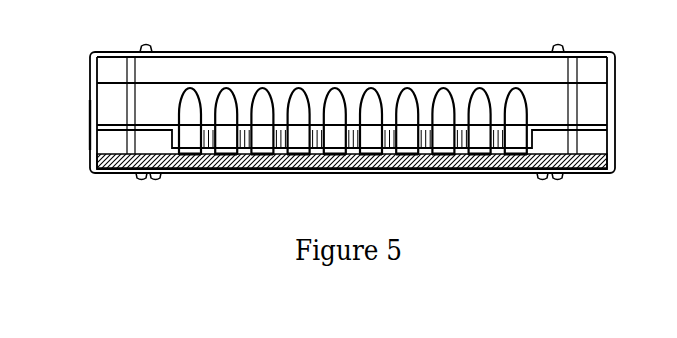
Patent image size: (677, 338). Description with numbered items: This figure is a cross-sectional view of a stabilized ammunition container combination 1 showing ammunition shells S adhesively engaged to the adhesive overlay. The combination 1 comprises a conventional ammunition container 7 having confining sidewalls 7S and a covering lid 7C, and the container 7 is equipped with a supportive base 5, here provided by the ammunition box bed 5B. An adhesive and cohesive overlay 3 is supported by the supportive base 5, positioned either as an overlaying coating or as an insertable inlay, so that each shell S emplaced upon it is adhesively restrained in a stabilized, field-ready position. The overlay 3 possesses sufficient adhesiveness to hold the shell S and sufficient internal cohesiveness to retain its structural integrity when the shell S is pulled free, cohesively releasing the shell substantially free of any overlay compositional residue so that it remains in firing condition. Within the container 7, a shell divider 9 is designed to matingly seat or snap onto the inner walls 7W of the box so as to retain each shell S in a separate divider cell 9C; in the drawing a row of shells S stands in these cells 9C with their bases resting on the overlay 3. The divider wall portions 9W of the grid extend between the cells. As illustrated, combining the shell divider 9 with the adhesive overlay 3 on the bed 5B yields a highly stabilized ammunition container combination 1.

The stabilized ammunition container combination 1 is at (83, 71).
The ammunition container 7 is at (613, 183).
The covering lid 7C is at (342, 50).
The confining sidewalls 7S is at (90, 132).
The inner walls 7W is at (90, 152).
The shell divider 9 is at (611, 128).
The divider cell 9C is at (320, 153).
The cell holder wall 9W is at (609, 139).
The ammunition shell S is at (185, 179).
The adhesive and cohesive overlay 3 is at (355, 176).
The supportive base 5 is at (422, 172).
The container bed 5B is at (488, 177).